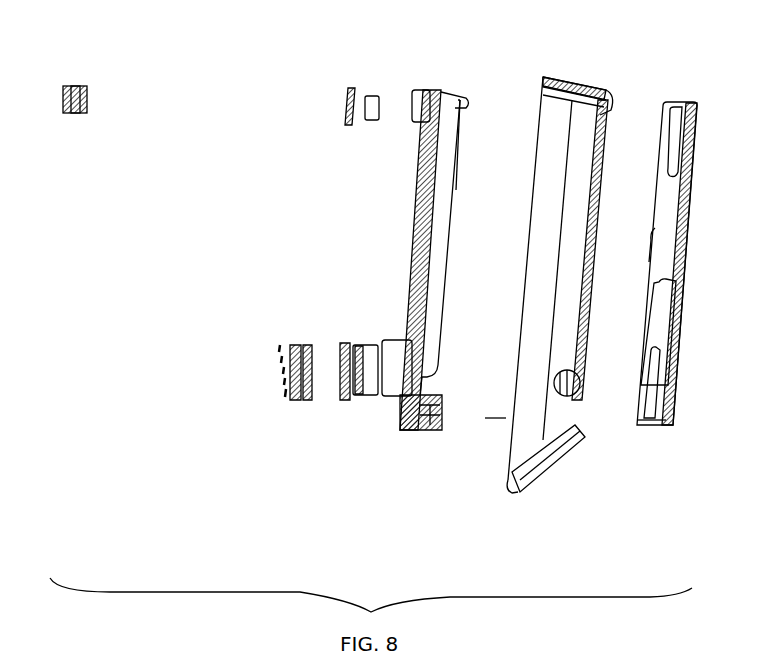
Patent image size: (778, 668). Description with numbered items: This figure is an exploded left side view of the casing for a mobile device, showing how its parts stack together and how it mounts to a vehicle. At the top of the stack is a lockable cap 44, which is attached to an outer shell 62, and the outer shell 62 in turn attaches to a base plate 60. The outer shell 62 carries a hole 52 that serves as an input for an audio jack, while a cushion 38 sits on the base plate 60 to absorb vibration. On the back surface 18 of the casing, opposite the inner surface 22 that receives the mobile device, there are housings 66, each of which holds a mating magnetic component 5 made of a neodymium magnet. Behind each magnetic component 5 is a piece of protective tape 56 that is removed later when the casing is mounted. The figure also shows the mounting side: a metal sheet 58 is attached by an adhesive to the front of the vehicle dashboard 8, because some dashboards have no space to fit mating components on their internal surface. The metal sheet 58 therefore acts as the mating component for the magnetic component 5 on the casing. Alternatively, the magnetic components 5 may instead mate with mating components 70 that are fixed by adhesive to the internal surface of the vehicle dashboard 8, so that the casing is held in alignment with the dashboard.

The magnetic component 5 is at (371, 106).
The vehicle dashboard 8 is at (283, 398).
The back surface 18 is at (420, 203).
The inner surface 22 is at (456, 190).
The cushion 38 is at (485, 418).
The lockable cap 44 is at (686, 90).
The hole 52 is at (571, 392).
The protective tape 56 is at (347, 98).
The metal sheet 58 is at (308, 402).
The base plate 60 is at (352, 219).
The outer shell 62 is at (572, 264).
The housing 66 is at (425, 102).
The mating component 70 is at (69, 88).